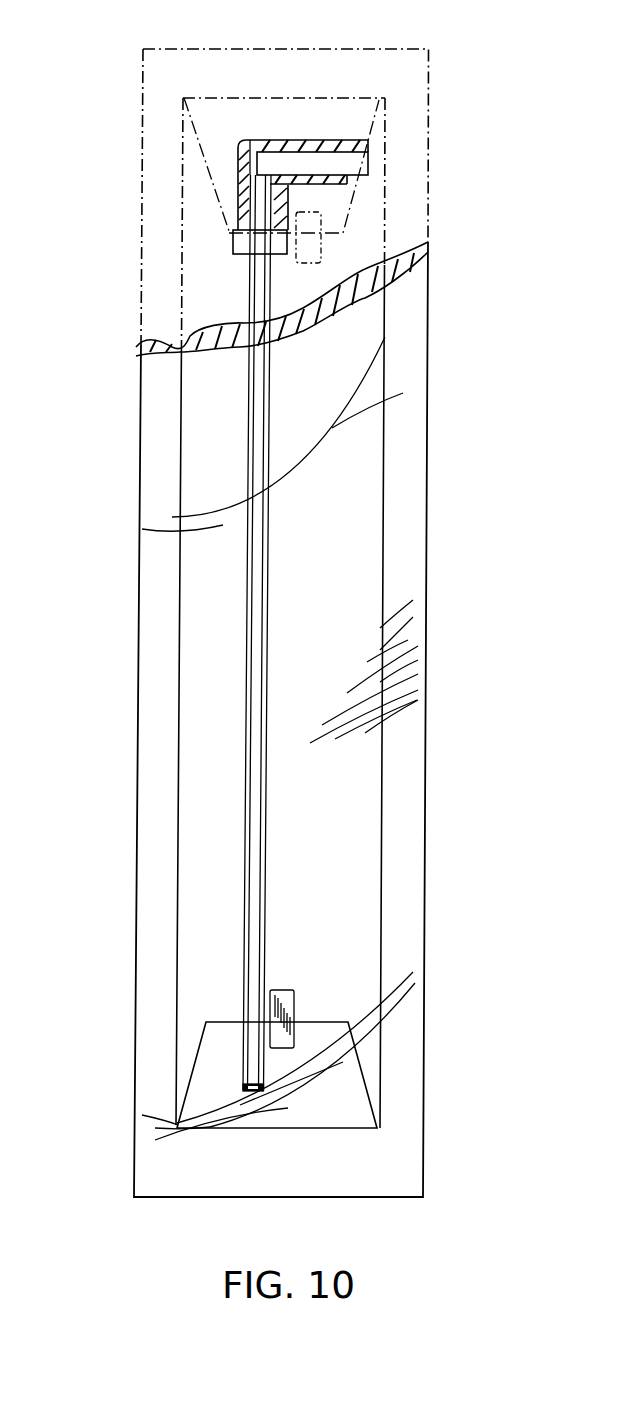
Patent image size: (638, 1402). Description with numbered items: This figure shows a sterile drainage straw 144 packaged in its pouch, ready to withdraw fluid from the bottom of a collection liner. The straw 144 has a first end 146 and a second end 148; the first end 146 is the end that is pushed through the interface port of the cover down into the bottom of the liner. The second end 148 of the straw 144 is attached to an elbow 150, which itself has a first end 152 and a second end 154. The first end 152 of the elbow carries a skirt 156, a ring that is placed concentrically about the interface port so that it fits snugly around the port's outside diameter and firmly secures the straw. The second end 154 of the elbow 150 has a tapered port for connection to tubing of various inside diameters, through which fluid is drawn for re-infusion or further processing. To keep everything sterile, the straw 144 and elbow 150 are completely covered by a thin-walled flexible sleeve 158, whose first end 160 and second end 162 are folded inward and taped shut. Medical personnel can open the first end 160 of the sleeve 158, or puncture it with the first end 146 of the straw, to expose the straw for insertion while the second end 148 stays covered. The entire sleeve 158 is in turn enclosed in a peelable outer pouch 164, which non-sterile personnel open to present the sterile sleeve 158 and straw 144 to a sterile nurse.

The straw 144 is at (253, 685).
The first end of the straw 146 is at (243, 1090).
The second end of the straw 148 is at (265, 175).
The elbow 150 is at (312, 143).
The first end of the elbow 152 is at (240, 193).
The second end of the elbow 154 is at (368, 161).
The skirt 156 is at (232, 248).
The sleeve 158 is at (370, 283).
The first end of the sleeve 160 is at (263, 1130).
The second end of the sleeve 162 is at (317, 107).
The outer pouch 164 is at (428, 491).